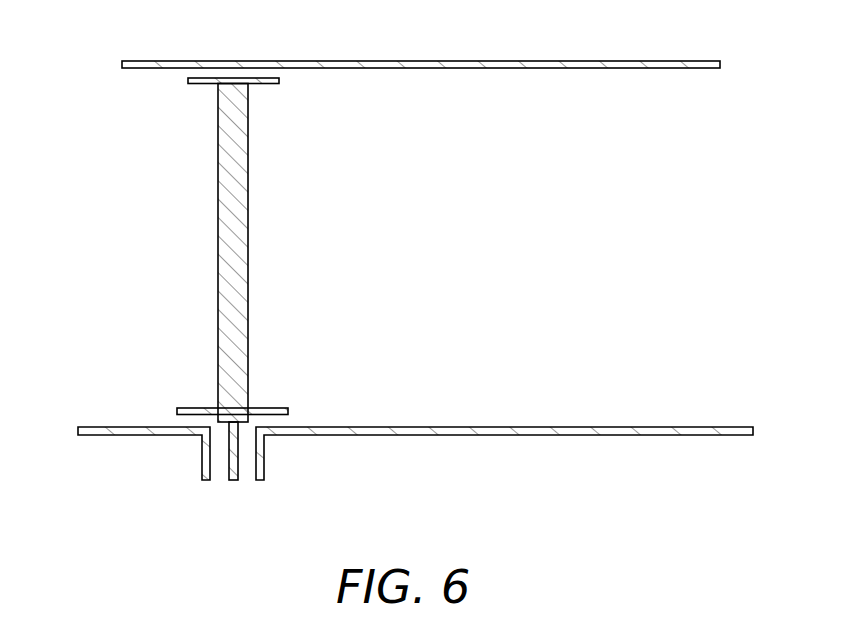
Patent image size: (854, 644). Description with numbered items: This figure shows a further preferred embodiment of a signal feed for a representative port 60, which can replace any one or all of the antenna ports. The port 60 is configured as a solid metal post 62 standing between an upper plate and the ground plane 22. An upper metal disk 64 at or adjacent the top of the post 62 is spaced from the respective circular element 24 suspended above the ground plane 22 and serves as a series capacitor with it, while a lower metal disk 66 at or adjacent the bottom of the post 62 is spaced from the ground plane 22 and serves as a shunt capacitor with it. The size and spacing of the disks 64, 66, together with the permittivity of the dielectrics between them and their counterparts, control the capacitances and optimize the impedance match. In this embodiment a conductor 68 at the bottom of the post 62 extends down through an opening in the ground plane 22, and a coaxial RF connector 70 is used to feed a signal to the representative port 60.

The ground plane 22 is at (90, 427).
The upper plate 24 is at (135, 61).
The representative port 60 is at (147, 204).
The solid metal post 62 is at (248, 222).
The upper metal disk 64 is at (271, 85).
The lower metal disk 66 is at (276, 408).
The conductor 68 is at (228, 480).
The coaxial RF connector 70 is at (251, 486).